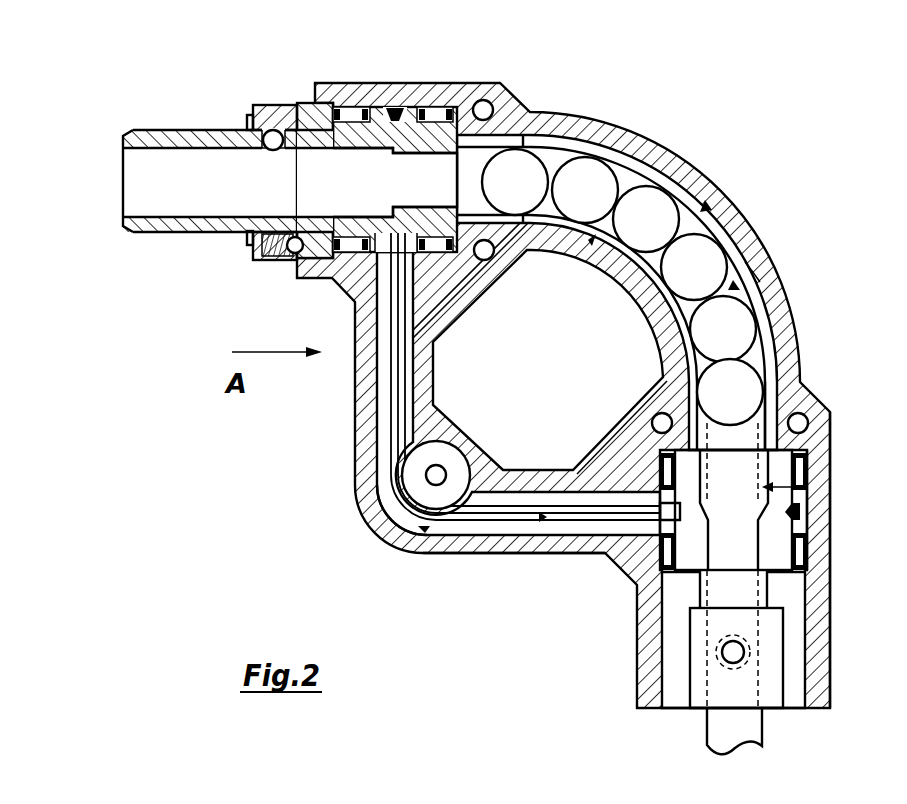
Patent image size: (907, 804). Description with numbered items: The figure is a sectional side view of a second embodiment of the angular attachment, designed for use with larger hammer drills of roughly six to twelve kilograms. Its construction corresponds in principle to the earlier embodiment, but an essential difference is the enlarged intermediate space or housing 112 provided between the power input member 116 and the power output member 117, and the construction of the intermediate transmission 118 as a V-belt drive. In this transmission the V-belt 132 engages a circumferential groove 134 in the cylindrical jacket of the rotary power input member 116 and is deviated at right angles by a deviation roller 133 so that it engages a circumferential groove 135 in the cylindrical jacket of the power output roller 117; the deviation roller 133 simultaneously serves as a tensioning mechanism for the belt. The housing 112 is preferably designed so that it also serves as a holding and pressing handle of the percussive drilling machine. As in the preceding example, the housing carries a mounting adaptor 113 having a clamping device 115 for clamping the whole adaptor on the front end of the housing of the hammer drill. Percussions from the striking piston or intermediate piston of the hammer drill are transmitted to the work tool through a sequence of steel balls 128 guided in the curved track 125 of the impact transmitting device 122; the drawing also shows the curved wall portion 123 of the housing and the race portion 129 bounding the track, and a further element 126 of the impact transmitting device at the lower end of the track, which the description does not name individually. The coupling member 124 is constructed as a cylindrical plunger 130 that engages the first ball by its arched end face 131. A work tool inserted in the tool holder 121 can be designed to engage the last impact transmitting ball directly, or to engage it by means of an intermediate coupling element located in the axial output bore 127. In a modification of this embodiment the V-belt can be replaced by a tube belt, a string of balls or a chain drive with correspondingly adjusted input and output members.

The housing 112 is at (685, 178).
The mounting adaptor 113 is at (824, 580).
The clamping device 115 is at (736, 654).
The power input member 116 is at (813, 440).
The power output member 117 is at (437, 128).
The intermediate transmission 118 is at (423, 534).
The tool holder 121 is at (186, 192).
The impact transmitting device 122 is at (704, 203).
The outer housing band 123 is at (764, 238).
The coupling member 124 is at (807, 486).
The curved track 125 is at (588, 240).
The lower fitting 126 is at (703, 460).
The axial output bore 127 is at (430, 190).
The steel balls 128 is at (592, 172).
The race 129 is at (760, 322).
The cylindrical plunger 130 is at (745, 730).
The arched end face 131 is at (792, 398).
The V-belt 132 is at (545, 515).
The deviation roller 133 is at (417, 482).
The circumferential groove 134 is at (614, 560).
The circumferential groove 135 is at (399, 108).